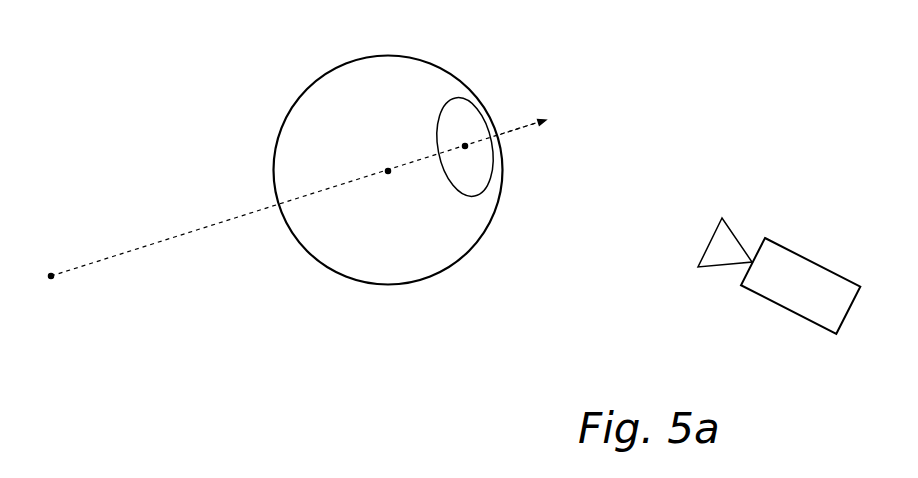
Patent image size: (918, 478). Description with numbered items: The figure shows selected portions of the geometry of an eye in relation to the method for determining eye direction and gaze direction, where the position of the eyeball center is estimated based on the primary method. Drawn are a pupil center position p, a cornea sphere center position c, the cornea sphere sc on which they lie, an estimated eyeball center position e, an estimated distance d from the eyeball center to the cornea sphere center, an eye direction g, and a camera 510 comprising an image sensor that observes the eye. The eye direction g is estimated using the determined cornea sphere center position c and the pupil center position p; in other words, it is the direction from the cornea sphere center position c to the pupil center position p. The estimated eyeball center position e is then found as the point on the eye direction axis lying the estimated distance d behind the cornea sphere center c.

The cornea sphere sc is at (473, 245).
The estimated distance from the eyeball center to the cornea sphere center d is at (211, 227).
The eye direction g is at (522, 132).
The estimated eyeball center position e is at (51, 278).
The cornea sphere center position c is at (388, 173).
The pupil center position p is at (465, 146).
The camera 510 is at (782, 287).